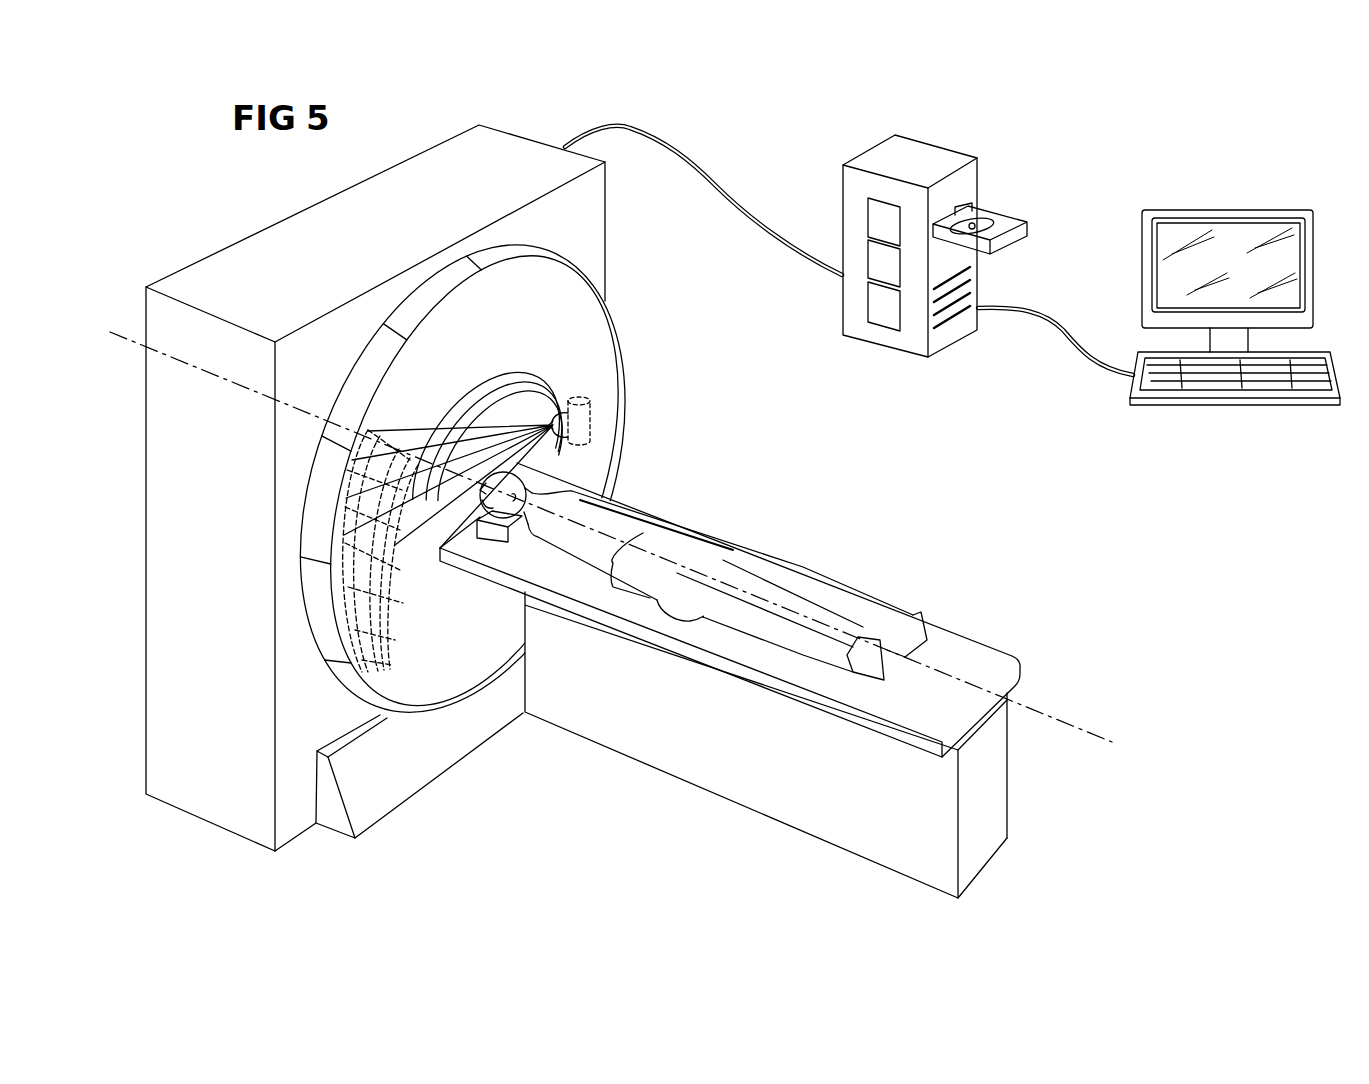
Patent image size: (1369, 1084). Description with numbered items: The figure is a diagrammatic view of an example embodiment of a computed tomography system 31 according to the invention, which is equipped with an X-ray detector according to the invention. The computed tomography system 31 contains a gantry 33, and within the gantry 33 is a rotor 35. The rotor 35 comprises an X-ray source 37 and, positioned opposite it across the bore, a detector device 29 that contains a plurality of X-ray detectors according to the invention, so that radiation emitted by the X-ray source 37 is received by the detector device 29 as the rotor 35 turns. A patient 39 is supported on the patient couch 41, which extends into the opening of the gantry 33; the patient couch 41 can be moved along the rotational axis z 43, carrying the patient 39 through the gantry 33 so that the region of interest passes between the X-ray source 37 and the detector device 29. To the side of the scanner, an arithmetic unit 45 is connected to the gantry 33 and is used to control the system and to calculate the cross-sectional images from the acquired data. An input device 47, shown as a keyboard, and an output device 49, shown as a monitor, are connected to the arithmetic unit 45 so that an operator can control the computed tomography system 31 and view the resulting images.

The detector device 29 is at (396, 642).
The computed tomography system 31 is at (141, 638).
The gantry 33 is at (246, 229).
The rotor 35 is at (600, 343).
The X-ray source 37 is at (585, 422).
The patient 39 is at (783, 590).
The patient couch 41 is at (828, 825).
The rotational axis z 43 is at (137, 345).
The arithmetic unit 45 is at (927, 155).
The input device 47 is at (1130, 390).
The output device 49 is at (1145, 273).